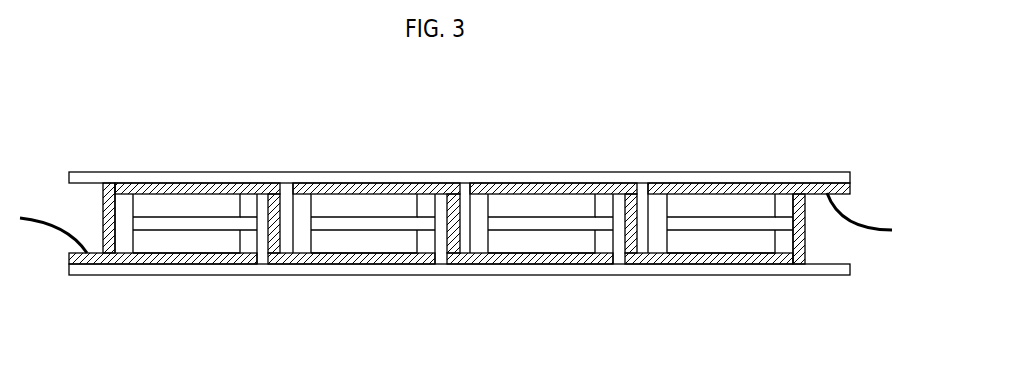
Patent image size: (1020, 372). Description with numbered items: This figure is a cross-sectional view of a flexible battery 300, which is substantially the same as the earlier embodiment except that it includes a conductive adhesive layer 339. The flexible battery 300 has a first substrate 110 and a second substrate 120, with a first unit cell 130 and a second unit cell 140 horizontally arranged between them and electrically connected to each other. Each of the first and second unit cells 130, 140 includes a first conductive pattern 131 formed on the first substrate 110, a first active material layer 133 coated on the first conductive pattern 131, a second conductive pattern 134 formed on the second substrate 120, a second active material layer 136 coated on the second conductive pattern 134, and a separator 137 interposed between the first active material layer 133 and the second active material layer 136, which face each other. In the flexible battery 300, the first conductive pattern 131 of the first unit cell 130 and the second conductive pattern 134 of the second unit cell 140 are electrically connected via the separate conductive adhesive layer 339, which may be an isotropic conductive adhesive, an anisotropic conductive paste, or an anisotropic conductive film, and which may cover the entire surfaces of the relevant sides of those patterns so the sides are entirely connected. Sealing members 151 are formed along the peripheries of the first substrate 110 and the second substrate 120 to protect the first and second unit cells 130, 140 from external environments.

The first substrate 110 is at (850, 175).
The second substrate 120 is at (850, 268).
The first unit cell 130 is at (267, 280).
The second unit cell 140 is at (450, 280).
The first conductive pattern 131 is at (122, 190).
The first active material layer 133 is at (177, 205).
The second conductive pattern 134 is at (145, 253).
The second active material layer 136 is at (206, 240).
The separator 137 is at (233, 225).
The sealing member 151 is at (102, 205).
The conductive adhesive layer 339 is at (277, 248).
The flexible battery 300 is at (477, 206).